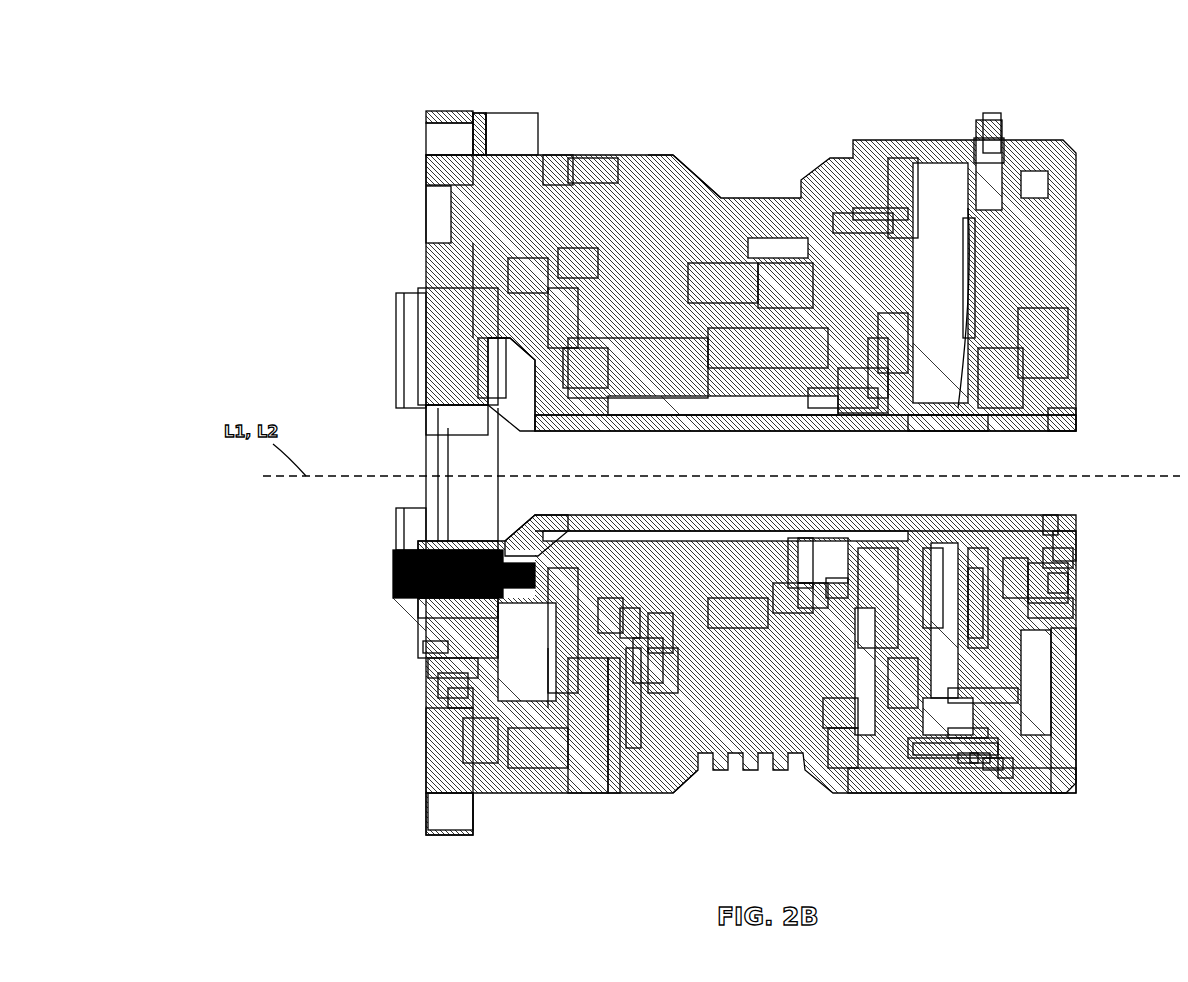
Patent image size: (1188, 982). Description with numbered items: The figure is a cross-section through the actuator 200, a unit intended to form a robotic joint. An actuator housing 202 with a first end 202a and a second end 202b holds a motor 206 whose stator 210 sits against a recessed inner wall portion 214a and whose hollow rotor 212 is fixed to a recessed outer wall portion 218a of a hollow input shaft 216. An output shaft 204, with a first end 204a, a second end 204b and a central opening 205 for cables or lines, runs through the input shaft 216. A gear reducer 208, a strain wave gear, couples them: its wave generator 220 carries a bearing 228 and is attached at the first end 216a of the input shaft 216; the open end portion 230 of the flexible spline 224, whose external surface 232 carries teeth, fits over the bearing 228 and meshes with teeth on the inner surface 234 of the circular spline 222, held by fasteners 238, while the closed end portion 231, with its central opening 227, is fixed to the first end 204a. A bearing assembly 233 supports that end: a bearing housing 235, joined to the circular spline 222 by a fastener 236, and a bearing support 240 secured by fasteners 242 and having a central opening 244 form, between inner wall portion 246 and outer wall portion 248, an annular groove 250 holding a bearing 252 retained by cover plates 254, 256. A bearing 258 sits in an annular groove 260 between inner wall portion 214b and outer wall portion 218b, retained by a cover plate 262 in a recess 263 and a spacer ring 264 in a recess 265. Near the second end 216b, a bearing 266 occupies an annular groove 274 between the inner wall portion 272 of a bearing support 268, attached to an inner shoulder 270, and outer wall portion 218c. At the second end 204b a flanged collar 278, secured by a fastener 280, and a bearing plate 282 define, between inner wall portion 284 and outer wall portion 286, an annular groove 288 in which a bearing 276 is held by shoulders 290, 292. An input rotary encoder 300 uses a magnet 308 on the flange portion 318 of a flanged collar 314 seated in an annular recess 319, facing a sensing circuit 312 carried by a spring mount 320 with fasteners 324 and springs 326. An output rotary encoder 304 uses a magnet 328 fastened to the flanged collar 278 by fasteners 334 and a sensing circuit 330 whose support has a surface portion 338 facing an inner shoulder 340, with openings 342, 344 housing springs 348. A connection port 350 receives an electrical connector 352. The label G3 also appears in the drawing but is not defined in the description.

The actuator 200 is at (755, 42).
The actuator housing 202 is at (645, 147).
The first end of the actuator housing 202a is at (590, 705).
The second end of the actuator housing 202b is at (1040, 775).
The output shaft 204 is at (1000, 425).
The first end of the output shaft 204a is at (485, 386).
The second end of the output shaft 204b is at (1068, 415).
The central opening of the output shaft 205 is at (940, 425).
The motor 206 is at (740, 255).
The gear reducer 208 is at (575, 150).
The stator 210 is at (770, 260).
The rotor 212 is at (745, 360).
The recessed inner wall portion of the actuator housing 214a is at (728, 245).
The inner wall portion of the actuator housing 214b is at (678, 705).
The input shaft 216 is at (690, 365).
The first end of the input shaft 216a is at (495, 352).
The second end of the input shaft 216b is at (870, 560).
The recessed outer wall portion of the input shaft 218a is at (740, 597).
The outer wall portion of the input shaft 218b is at (655, 622).
The outer wall portion of the input shaft 218c is at (800, 588).
The wave generator 220 is at (575, 375).
The circular spline 222 is at (548, 147).
The flexible spline 224 is at (513, 255).
The central opening of the closed end portion 227 is at (465, 410).
The bearing 228 is at (555, 295).
The open end portion of the flexible spline 230 is at (528, 765).
The closed end portion of the flexible spline 231 is at (480, 366).
The external surface of the open end portion 232 is at (570, 255).
The bearing assembly 233 is at (432, 828).
The inner surface of the circular spline 234 is at (555, 660).
The bearing housing 235 is at (428, 158).
The fastener 236 is at (476, 735).
The fasteners 238 is at (472, 200).
The bearing support 240 is at (442, 612).
The fasteners 242 is at (392, 568).
The central opening of the bearing support 244 is at (440, 532).
The inner wall portion of the bearing housing 246 is at (440, 673).
The outer wall portion of the bearing support 248 is at (432, 640).
The annular groove 250 is at (428, 660).
The bearing 252 is at (458, 690).
The cover plate 254 is at (422, 750).
The cover plate 256 is at (412, 601).
The bearing 258 is at (660, 685).
The annular groove 260 is at (645, 670).
The cover plate 262 is at (605, 705).
The recess 263 is at (625, 705).
The spacer ring 264 is at (600, 598).
The recess 265 is at (620, 615).
The bearing 266 is at (828, 572).
The bearing support 268 is at (836, 742).
The inner shoulder of the actuator housing 270 is at (832, 708).
The inner wall portion of the bearing support 272 is at (792, 532).
The annular groove 274 is at (780, 590).
The bearing 276 is at (1045, 560).
The flanged collar 278 is at (1065, 535).
The fastener 280 is at (1045, 515).
The bearing plate 282 is at (1060, 668).
The inner wall portion of the bearing plate 284 is at (1042, 600).
The outer wall portion of the flanged collar 286 is at (1062, 556).
The annular groove 288 is at (1050, 577).
The shoulder of the flanged collar 290 is at (985, 373).
The shoulder of the bearing plate 292 is at (1045, 342).
The input rotary encoder 300 is at (895, 692).
The output rotary encoder 304 is at (962, 690).
The magnet 308 is at (888, 320).
The sensing circuit 312 is at (925, 565).
The flanged collar 314 is at (850, 400).
The flange portion 318 is at (876, 382).
The annular recess 319 is at (830, 388).
The spring mount 320 is at (898, 230).
The fasteners 324 is at (840, 225).
The springs 326 is at (865, 212).
The magnet 328 is at (965, 305).
The sensing circuit 330 is at (968, 562).
The fasteners 334 is at (1015, 570).
The surface portion 338 is at (972, 756).
The inner shoulder of the actuator housing 340 is at (960, 755).
The opening 342 is at (998, 772).
The opening 344 is at (962, 728).
The springs 348 is at (978, 742).
The connection port 350 is at (984, 130).
The electrical connector 352 is at (990, 135).
The gap G3 is at (988, 725).